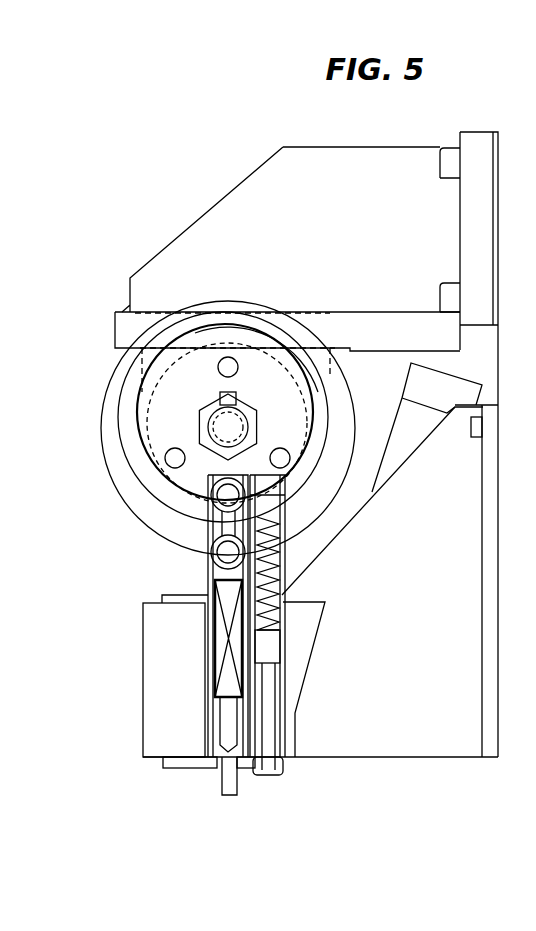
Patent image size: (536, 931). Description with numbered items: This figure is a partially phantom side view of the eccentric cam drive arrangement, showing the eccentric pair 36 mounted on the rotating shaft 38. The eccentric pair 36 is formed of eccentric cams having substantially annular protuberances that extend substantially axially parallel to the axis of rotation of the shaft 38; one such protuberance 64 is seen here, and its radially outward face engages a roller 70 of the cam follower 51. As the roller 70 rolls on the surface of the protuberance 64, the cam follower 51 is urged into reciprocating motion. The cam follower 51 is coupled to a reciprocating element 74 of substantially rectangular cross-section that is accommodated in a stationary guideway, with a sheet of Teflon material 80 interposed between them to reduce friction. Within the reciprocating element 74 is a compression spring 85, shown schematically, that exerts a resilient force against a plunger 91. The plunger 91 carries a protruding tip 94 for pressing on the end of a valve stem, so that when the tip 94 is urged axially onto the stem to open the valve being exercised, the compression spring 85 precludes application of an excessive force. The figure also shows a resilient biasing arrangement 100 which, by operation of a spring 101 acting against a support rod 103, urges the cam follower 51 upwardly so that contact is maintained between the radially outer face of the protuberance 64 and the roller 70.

The eccentric pair 36 is at (100, 430).
The shaft 38 is at (233, 430).
The cam follower 51 is at (205, 585).
The substantially annular protuberance 64 is at (223, 312).
The roller 70 is at (211, 490).
The reciprocating element 74 is at (207, 608).
The sheet of Teflon material 80 is at (206, 706).
The compression spring 85 is at (240, 630).
The plunger 91 is at (218, 760).
The tip 94 is at (228, 795).
The resilient biasing arrangement 100 is at (305, 631).
The spring 101 is at (332, 537).
The support rod 103 is at (270, 733).